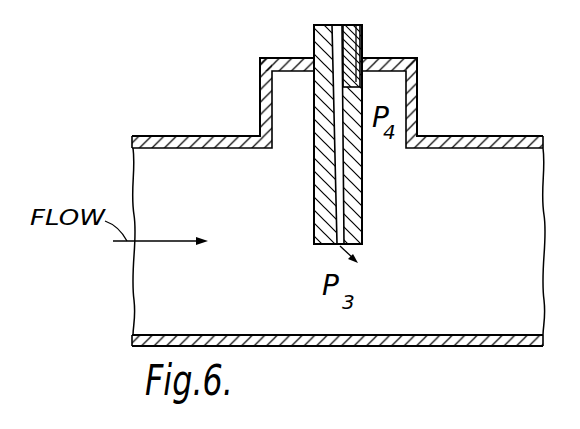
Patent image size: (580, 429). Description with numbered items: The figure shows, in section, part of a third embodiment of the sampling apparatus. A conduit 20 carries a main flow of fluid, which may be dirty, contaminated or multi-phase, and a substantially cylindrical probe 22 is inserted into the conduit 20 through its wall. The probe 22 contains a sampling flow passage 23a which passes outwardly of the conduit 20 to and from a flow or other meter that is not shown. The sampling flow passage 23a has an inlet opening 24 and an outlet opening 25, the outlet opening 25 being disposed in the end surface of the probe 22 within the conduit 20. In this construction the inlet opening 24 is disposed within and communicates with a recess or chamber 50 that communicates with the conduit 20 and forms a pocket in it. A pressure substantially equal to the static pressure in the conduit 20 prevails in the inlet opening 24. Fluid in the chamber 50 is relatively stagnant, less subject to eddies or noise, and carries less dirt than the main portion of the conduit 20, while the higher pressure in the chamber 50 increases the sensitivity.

The conduit 20 is at (186, 136).
The probe 22 is at (356, 188).
The sampling flow passage 23a is at (338, 191).
The inlet opening 24 is at (355, 80).
The outlet opening 25 is at (326, 246).
The recess or chamber 50 is at (368, 85).